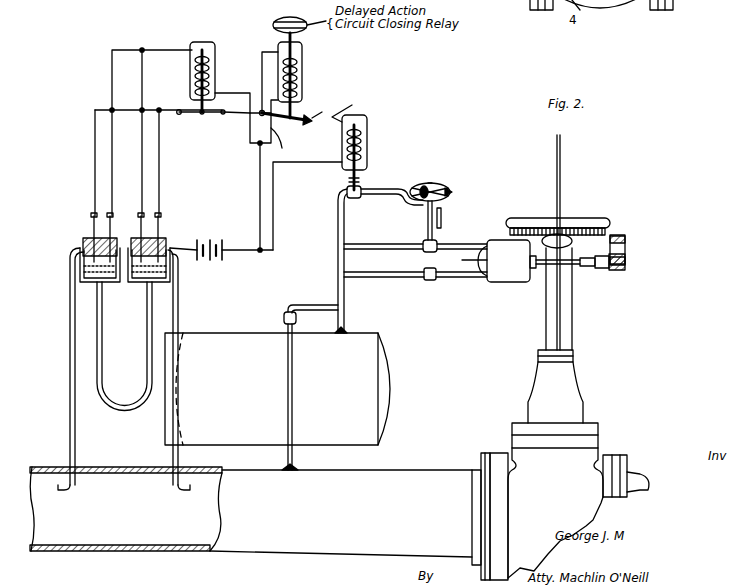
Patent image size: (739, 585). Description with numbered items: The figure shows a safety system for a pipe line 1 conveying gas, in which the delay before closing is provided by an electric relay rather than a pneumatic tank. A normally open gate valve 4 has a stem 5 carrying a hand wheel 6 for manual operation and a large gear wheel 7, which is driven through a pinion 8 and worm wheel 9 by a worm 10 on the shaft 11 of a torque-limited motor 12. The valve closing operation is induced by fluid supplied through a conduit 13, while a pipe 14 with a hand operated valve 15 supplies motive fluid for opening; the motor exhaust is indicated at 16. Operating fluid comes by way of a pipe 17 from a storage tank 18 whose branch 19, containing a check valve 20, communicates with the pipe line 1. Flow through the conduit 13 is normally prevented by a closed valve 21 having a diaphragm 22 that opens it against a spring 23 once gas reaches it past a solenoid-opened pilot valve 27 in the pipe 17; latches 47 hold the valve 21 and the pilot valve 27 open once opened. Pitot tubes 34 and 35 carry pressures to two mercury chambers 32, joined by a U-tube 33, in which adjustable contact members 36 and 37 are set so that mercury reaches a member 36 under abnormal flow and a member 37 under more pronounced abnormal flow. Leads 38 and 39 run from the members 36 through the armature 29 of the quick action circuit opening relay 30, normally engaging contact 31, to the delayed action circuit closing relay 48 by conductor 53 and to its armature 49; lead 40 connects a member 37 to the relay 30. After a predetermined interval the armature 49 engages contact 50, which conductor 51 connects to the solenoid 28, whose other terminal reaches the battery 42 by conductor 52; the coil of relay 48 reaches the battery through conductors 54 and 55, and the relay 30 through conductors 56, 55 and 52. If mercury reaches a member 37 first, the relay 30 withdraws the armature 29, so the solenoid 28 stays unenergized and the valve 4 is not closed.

The pipe line 1 is at (196, 553).
The gate valve 4 is at (598, 443).
The valve stem 5 is at (561, 157).
The hand wheel 6 is at (561, 226).
The gear wheel 7 is at (525, 222).
The pinion 8 is at (624, 233).
The worm wheel 9 is at (611, 269).
The worm 10 is at (627, 260).
The motor shaft 11 is at (578, 267).
The motor 12 is at (513, 277).
The conduit 13 is at (375, 250).
The pipe 14 is at (472, 278).
The hand operated valve 15 is at (428, 281).
The exhaust 16 is at (462, 260).
The pipe 17 is at (345, 290).
The storage tank 18 is at (386, 390).
The branch pipe 19 is at (296, 303).
The check valve 20 is at (284, 316).
The normally closed valve 21 is at (428, 222).
The diaphragm 22 is at (443, 190).
The valve closing spring 23 is at (436, 186).
The pilot valve 27 is at (348, 180).
The solenoid 28 is at (366, 136).
The armature 29 is at (196, 114).
The quick action circuit opening relay 30 is at (190, 60).
The contact member 31 is at (112, 78).
The mercury containing chamber 32 is at (80, 263).
The U tube 33 is at (120, 408).
The Pitot tube 34 is at (73, 491).
The Pitot tube 35 is at (180, 491).
The adjustable contact member 36 is at (92, 228).
The adjustable contact member 37 is at (130, 223).
The lead 38 is at (159, 175).
The lead 39 is at (95, 175).
The lead 40 is at (142, 150).
The battery 42 is at (226, 255).
The latch 47 is at (359, 181).
The delayed action circuit closing relay 48 is at (273, 27).
The armature 49 is at (286, 127).
The contact 50 is at (316, 115).
The conductor 51 is at (223, 116).
The conductor 52 is at (273, 212).
The conductor 53 is at (262, 68).
The conductor 54 is at (284, 142).
The conductor 55 is at (260, 184).
The conductor 56 is at (252, 95).